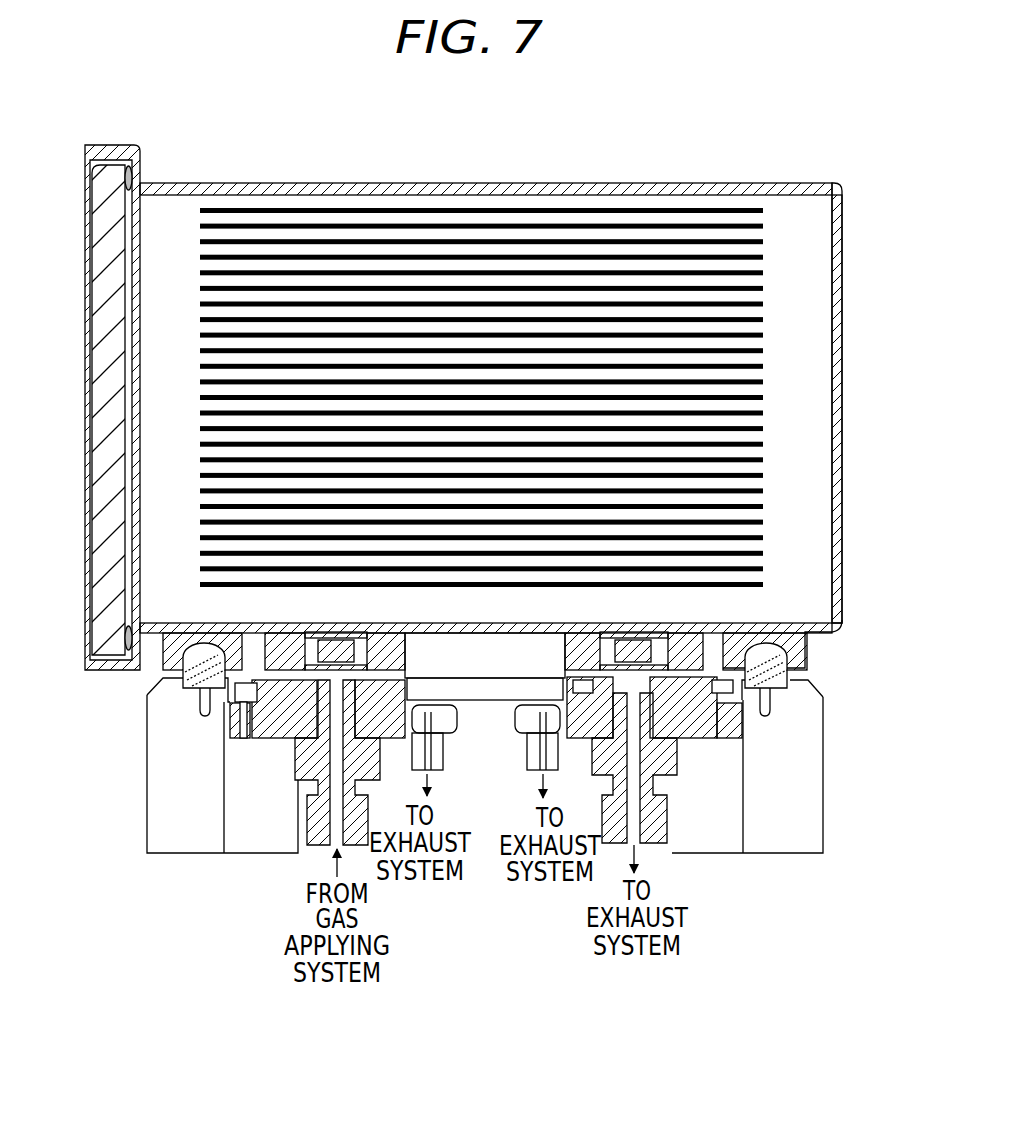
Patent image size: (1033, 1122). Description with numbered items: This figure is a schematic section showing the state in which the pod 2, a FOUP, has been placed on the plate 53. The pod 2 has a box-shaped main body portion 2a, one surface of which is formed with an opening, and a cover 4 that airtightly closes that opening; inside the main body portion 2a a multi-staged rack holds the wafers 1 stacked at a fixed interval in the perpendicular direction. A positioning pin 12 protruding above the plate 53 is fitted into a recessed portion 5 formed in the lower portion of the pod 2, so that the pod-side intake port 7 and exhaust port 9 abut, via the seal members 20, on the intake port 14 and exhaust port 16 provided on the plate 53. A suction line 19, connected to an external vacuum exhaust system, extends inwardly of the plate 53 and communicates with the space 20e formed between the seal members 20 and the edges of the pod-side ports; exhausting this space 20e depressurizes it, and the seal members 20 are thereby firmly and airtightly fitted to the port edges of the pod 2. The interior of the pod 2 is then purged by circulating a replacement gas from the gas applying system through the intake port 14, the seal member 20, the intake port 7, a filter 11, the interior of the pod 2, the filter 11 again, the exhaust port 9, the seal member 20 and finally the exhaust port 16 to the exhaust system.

The wafer 1 is at (585, 208).
The pod 2 is at (733, 148).
The main body portion 2a is at (305, 183).
The cover 4 is at (115, 245).
The recessed portion 5 is at (188, 678).
The intake port 7 is at (310, 642).
The exhaust port 9 is at (700, 668).
The filter 11 is at (324, 652).
The positioning pin 12 is at (198, 690).
The intake port 14 is at (325, 790).
The exhaust port 16 is at (634, 762).
The suction line 19 is at (528, 758).
The seal member 20 is at (752, 660).
The space 20e is at (385, 655).
The plate 53 is at (131, 801).